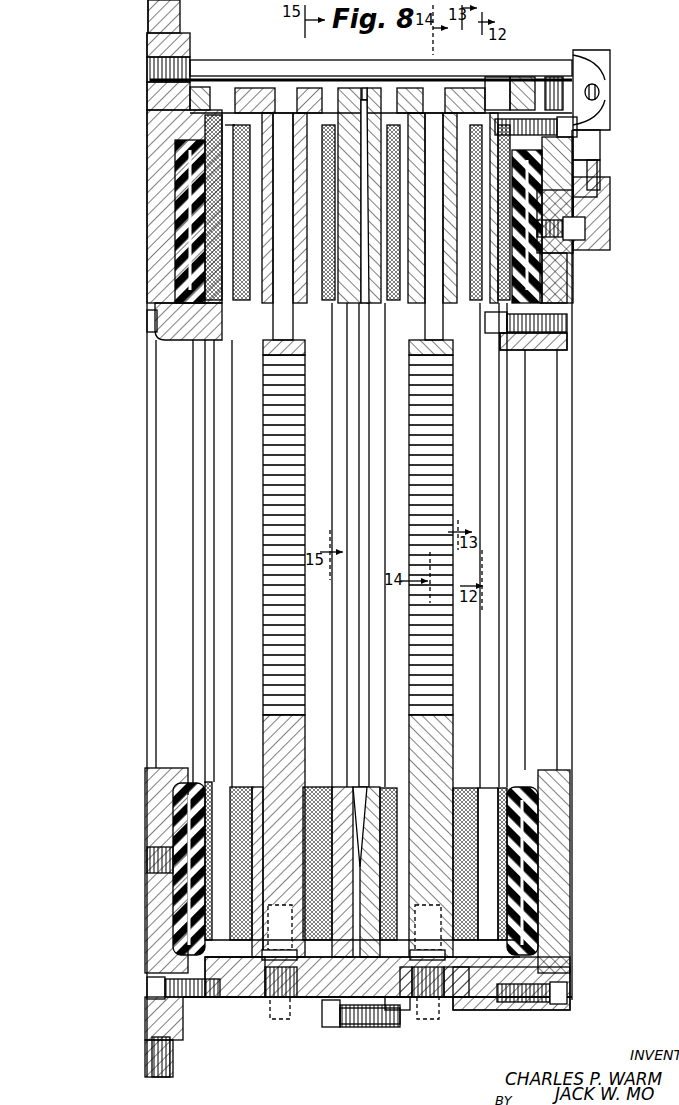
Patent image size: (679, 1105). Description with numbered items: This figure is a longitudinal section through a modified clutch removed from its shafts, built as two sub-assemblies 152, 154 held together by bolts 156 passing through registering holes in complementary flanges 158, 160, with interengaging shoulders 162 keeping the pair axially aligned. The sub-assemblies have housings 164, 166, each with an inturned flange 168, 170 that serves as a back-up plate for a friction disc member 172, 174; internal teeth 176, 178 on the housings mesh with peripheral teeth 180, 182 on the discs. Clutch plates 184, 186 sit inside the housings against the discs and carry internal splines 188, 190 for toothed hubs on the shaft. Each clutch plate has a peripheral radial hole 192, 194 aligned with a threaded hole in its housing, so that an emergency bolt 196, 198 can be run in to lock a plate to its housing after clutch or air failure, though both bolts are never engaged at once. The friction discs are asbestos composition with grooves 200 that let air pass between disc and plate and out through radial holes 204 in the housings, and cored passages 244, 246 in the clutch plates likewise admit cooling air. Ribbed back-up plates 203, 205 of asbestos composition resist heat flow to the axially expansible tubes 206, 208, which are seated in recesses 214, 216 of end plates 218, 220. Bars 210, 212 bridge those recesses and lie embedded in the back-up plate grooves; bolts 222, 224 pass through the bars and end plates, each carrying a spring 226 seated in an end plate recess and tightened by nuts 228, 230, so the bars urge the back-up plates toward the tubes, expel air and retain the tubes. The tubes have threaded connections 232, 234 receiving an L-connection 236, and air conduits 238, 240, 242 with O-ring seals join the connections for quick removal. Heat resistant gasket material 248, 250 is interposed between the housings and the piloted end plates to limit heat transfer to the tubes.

The sub-assembly 152 is at (240, 1010).
The sub-assembly 154 is at (453, 1007).
The bolts 156 is at (343, 1030).
The flange 158 is at (327, 1027).
The flange 160 is at (337, 1027).
The interengaging shoulders 162 is at (400, 1020).
The housing 164 is at (238, 1008).
The housing 166 is at (517, 1010).
The inturned flange 168 is at (347, 782).
The inturned flange 170 is at (385, 790).
The friction disc member 172 is at (317, 790).
The friction disc member 174 is at (463, 790).
The internal teeth 176 is at (297, 1000).
The internal teeth 178 is at (458, 1000).
The peripheral teeth 180 is at (310, 990).
The peripheral teeth 182 is at (413, 1000).
The clutch plate 184 is at (270, 575).
The clutch plate 186 is at (520, 548).
The internal teeth or splines 188 is at (270, 545).
The internal teeth or splines 190 is at (446, 490).
The radial hole 192 is at (250, 997).
The radial hole 194 is at (462, 997).
The screw threaded bolt 196 is at (280, 1020).
The screw threaded bolt 198 is at (438, 1020).
The grooves 200 is at (305, 345).
The back-up or reaction plate 203 is at (247, 345).
The radial holes 204 is at (286, 100).
The back-up or reaction plate 205 is at (503, 790).
The axially expansible tube 206 is at (173, 257).
The axially expansible tube 208 is at (537, 847).
The bar 210 is at (262, 345).
The bar 212 is at (490, 350).
The recess 214 is at (160, 297).
The recess 216 is at (535, 287).
The end plate 218 is at (158, 162).
The end plate 220 is at (552, 318).
The bolt 222 is at (148, 322).
The bolt 224 is at (566, 330).
The spring 226 is at (500, 345).
The nut 228 is at (215, 345).
The nut 230 is at (566, 342).
The threaded connection 232 is at (148, 858).
The threaded connection 234 is at (555, 266).
The L-connection 236 is at (603, 237).
The air conduit 238 is at (603, 144).
The air conduit 240 is at (608, 107).
The air conduit 242 is at (254, 80).
The cored passage 244 is at (283, 302).
The cored passage 246 is at (436, 302).
The heat resistant gasket material 248 is at (185, 1012).
The heat resistant gasket material 250 is at (533, 1027).